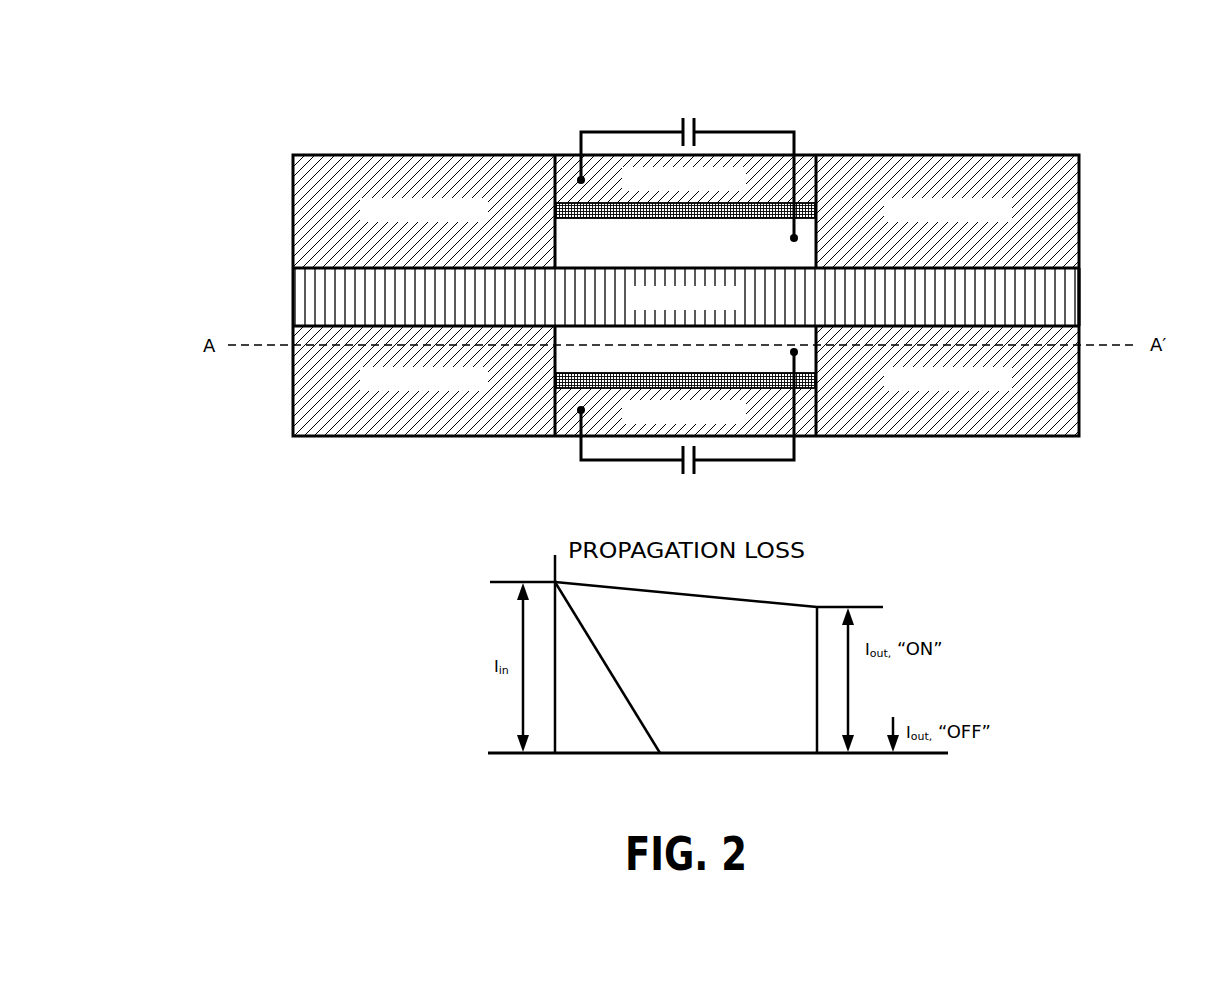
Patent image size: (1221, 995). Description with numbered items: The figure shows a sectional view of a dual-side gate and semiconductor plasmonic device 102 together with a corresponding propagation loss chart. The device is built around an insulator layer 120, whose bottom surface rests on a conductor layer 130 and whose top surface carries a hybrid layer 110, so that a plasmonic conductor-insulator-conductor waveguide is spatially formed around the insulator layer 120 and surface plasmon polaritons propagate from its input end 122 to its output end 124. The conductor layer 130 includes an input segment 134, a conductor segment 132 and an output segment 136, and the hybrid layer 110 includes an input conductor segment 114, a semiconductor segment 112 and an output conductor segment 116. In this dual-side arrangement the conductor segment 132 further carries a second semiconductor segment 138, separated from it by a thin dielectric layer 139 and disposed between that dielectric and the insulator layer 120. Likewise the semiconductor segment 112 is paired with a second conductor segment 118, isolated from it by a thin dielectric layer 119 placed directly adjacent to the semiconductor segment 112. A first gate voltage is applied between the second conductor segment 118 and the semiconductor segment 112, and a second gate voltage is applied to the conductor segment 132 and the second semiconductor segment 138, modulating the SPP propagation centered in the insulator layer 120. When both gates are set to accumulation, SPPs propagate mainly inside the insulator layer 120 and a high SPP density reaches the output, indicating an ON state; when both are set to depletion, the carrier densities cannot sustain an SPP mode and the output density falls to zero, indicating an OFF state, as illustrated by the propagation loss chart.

The dual-side gate and semiconductor plasmonic device 102 is at (164, 110).
The hybrid layer 110 is at (803, 152).
The semiconductor segment 112 is at (570, 233).
The input conductor segment 114 is at (308, 217).
The output conductor segment 116 is at (1080, 213).
The second conductor segment 118 is at (573, 162).
The thin dielectric layer 119 is at (818, 207).
The insulator layer 120 is at (293, 276).
The input end 122 is at (307, 295).
The output end 124 is at (1080, 297).
The conductor layer 130 is at (803, 437).
The conductor segment 132 is at (572, 432).
The input segment 134 is at (293, 392).
The output segment 136 is at (1080, 377).
The second semiconductor segment 138 is at (567, 358).
The thin dielectric layer 139 is at (817, 383).